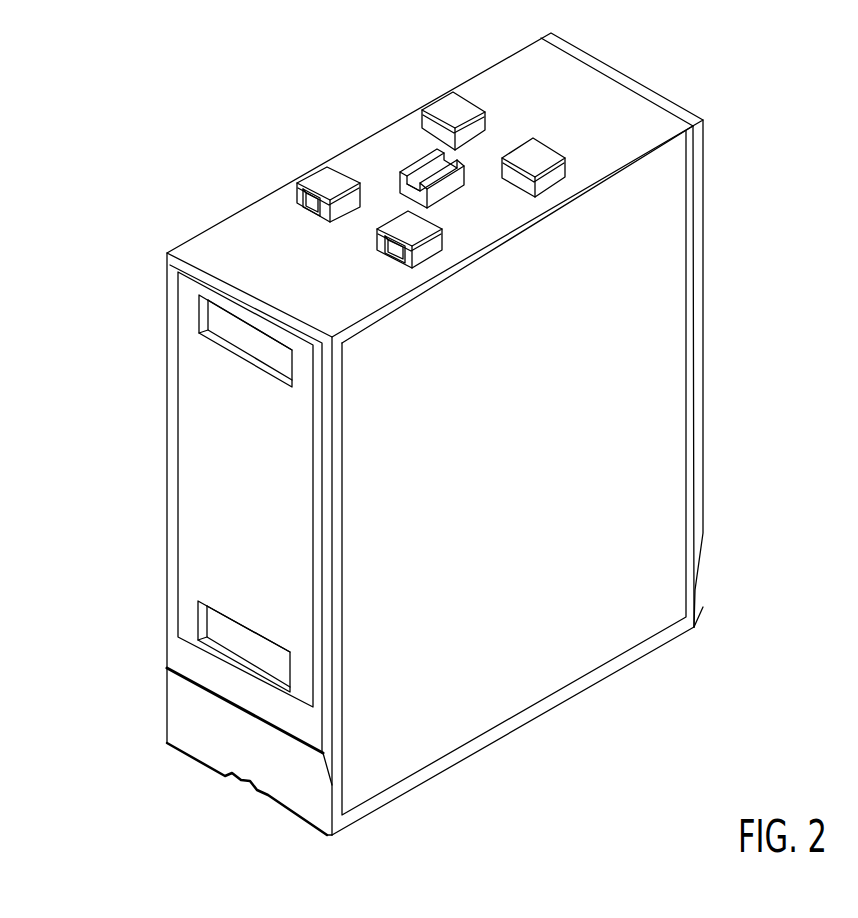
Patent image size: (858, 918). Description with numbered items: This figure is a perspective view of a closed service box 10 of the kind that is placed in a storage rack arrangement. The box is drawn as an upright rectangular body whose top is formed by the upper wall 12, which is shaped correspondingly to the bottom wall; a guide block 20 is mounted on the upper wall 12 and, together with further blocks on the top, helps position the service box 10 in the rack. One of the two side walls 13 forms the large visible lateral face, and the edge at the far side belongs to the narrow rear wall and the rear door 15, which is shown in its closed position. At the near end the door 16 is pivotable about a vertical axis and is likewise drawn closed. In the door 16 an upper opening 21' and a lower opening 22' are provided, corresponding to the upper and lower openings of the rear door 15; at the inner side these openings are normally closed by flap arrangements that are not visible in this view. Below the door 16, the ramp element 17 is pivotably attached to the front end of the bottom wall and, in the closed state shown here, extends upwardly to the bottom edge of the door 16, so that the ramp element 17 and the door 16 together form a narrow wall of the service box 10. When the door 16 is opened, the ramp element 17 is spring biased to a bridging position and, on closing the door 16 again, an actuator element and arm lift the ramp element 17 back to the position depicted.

The service box 10 is at (465, 434).
The upper wall 12 is at (652, 115).
The side wall 13 is at (670, 467).
The rear door 15 is at (699, 412).
The door 16 is at (213, 528).
The ramp element 17 is at (198, 725).
The guide block 20 is at (417, 164).
The upper opening 21' is at (193, 341).
The lower opening 22' is at (192, 646).